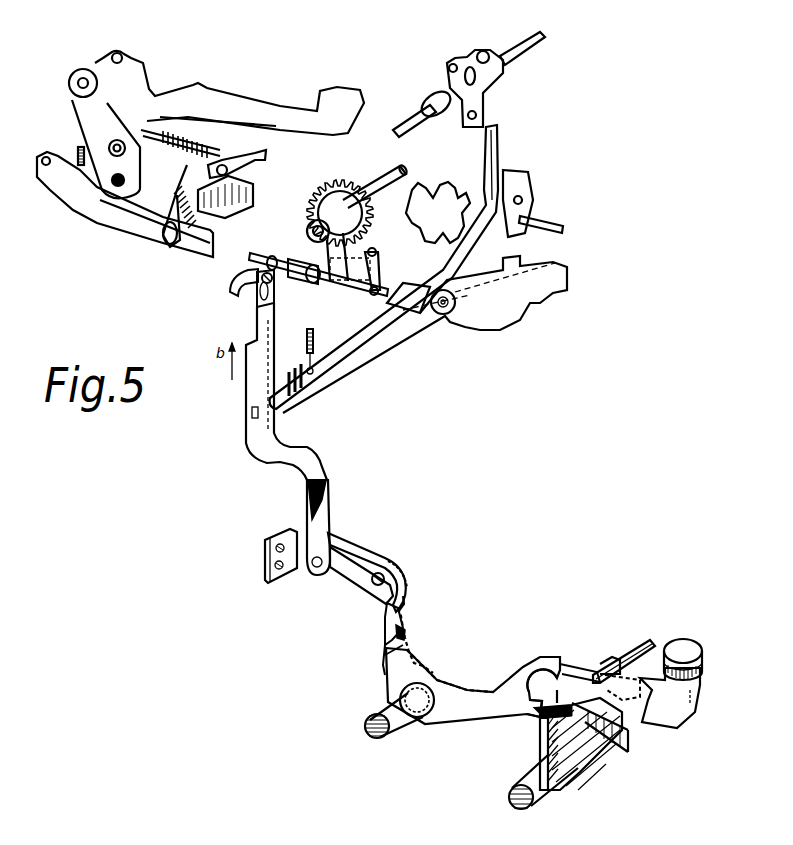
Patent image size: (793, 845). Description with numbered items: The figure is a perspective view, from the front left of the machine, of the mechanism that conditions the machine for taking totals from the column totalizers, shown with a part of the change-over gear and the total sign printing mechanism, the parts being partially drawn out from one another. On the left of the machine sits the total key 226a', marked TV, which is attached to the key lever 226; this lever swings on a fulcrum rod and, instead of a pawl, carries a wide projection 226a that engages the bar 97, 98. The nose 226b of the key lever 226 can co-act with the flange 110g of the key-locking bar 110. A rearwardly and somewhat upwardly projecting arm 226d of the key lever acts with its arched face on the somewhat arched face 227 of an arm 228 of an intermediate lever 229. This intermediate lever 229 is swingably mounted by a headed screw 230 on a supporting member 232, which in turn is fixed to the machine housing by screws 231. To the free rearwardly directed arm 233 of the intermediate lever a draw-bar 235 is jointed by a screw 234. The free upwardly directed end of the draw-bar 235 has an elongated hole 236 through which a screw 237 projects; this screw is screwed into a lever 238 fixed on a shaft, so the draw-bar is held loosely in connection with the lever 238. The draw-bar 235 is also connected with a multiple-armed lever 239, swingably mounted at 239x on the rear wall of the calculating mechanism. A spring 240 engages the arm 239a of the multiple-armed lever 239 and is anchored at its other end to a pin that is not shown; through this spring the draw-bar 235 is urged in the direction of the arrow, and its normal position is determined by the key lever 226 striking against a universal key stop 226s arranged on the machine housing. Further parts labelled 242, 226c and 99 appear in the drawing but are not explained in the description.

The lever 238 is at (243, 290).
The shaft 242 is at (318, 279).
The screw 237 is at (272, 283).
The elongated hole 236 is at (270, 302).
The spring 240 is at (327, 350).
The arm of the multiple-armed lever 239a is at (363, 348).
The multiple-armed lever 239 is at (463, 303).
The mounting point of the multiple-armed lever 239x is at (443, 314).
The draw-bar 235 is at (303, 460).
The screw 234 is at (316, 568).
The screws 231 is at (268, 547).
The supporting member 232 is at (347, 543).
The rearwardly directed arm 233 is at (347, 570).
The intermediate lever 229 is at (398, 568).
The headed screw 230 is at (385, 580).
The arm of the intermediate lever 228 is at (407, 598).
The arched face 227 is at (402, 611).
The wedge portion 226c is at (393, 611).
The arm of the key lever 226d is at (400, 630).
The key lever 226 is at (680, 714).
The bar 98 is at (560, 700).
The nose 226b is at (537, 708).
The key-locking bar 110 is at (577, 749).
The flange 110g is at (539, 714).
The rod 99 is at (522, 808).
The bar 97 is at (597, 704).
The wide projection 226a is at (634, 716).
The universal key stop 226s is at (630, 648).
The total key 226a' is at (704, 640).